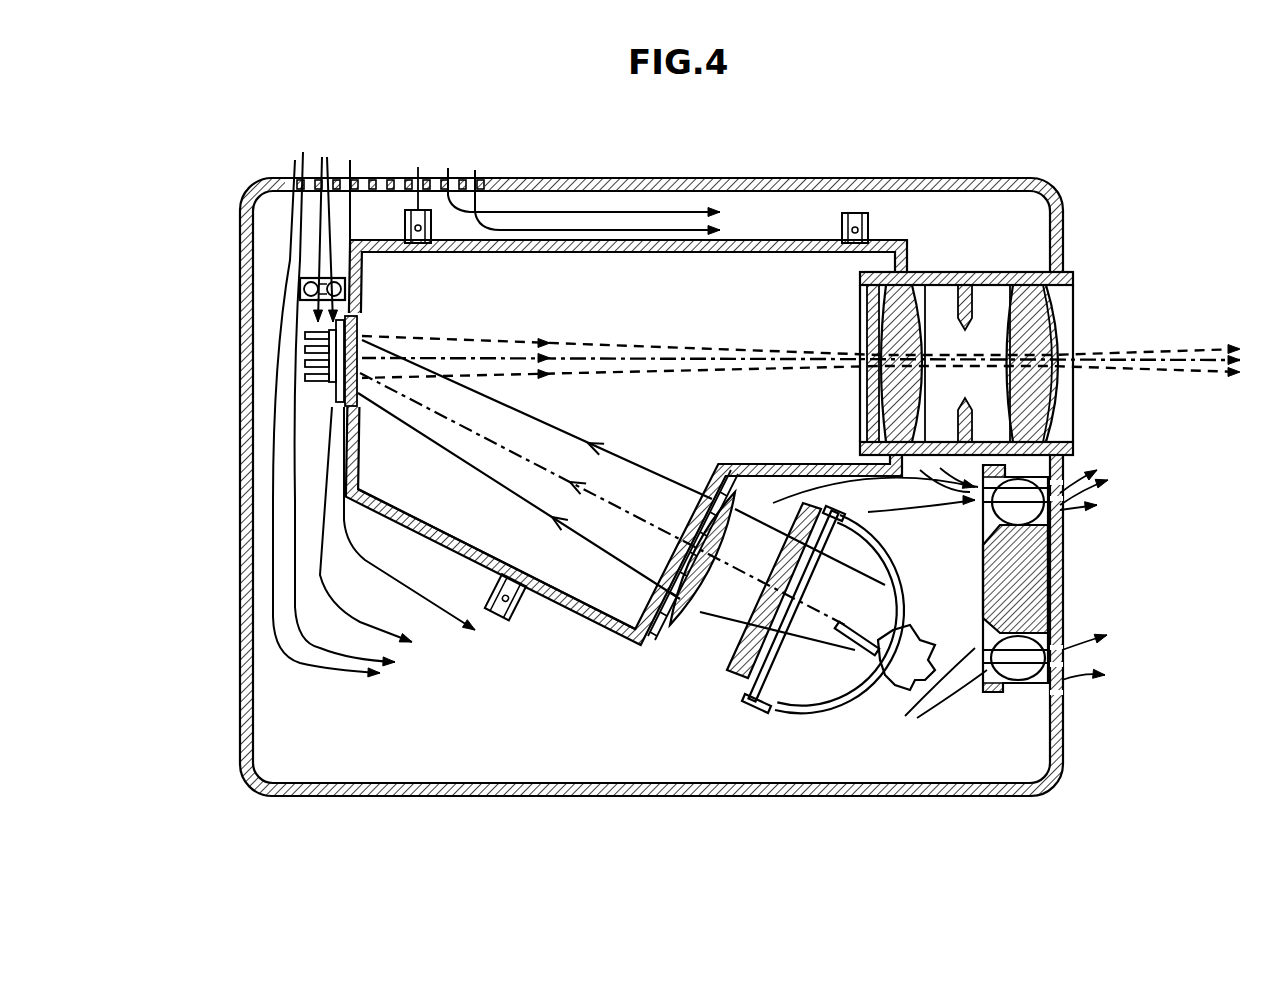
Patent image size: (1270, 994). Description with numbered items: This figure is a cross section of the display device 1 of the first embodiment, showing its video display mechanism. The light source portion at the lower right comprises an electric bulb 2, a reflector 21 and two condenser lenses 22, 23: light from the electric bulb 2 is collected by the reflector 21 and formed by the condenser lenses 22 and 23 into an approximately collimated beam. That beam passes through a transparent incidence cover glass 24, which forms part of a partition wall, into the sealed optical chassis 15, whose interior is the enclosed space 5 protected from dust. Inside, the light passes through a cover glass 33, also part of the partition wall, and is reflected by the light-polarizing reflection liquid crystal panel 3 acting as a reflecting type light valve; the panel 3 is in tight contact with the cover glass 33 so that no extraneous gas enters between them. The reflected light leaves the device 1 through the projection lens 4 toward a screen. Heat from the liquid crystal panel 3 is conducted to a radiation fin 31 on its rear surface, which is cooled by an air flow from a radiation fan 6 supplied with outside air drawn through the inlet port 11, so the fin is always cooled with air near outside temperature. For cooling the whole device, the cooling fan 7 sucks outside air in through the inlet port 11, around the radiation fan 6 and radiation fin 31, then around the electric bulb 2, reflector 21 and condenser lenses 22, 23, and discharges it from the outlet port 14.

The display device 1 is at (468, 797).
The electric bulb 2 is at (935, 650).
The reflection liquid crystal panel 3 is at (330, 402).
The projection lens 4 is at (947, 300).
The space 5 is at (420, 485).
The radiation fan 6 is at (322, 276).
The cooling fan 7 is at (1063, 563).
The inlet port 11 is at (455, 184).
The outlet port 14 is at (1063, 652).
The optical chassis 15 is at (566, 620).
The reflector 21 is at (862, 700).
The condenser lens 22 is at (736, 680).
The condenser lens 23 is at (680, 640).
The incidence cover glass 24 is at (668, 627).
The radiation fin 31 is at (305, 378).
The cover glass 33 is at (360, 322).